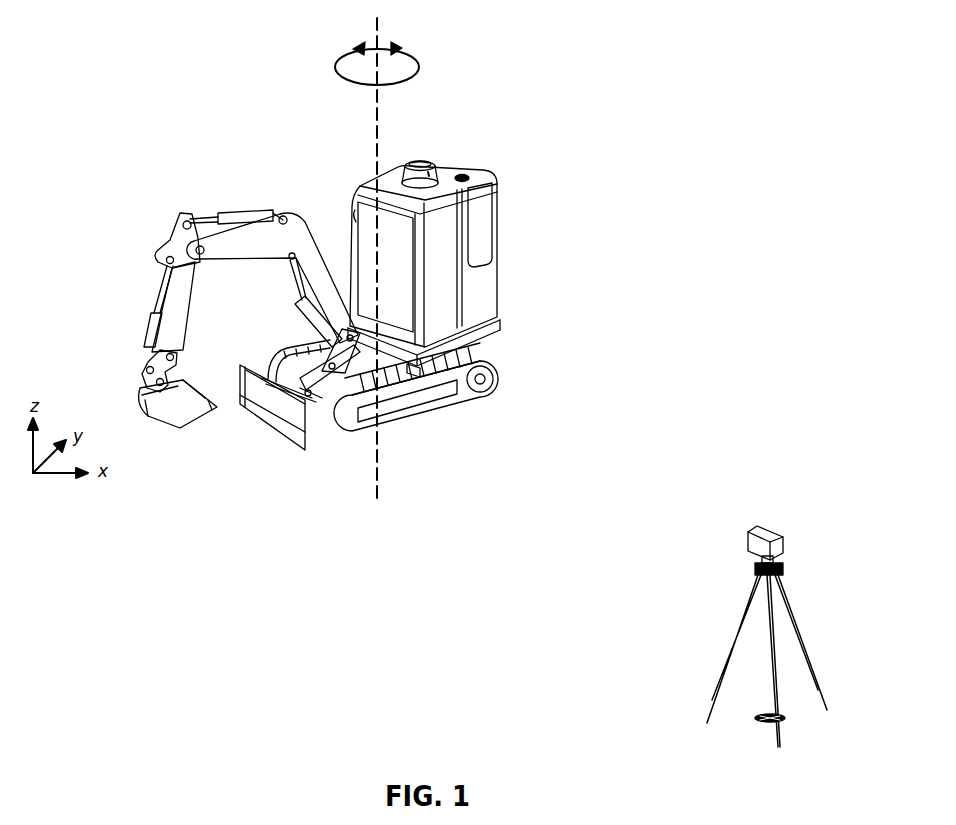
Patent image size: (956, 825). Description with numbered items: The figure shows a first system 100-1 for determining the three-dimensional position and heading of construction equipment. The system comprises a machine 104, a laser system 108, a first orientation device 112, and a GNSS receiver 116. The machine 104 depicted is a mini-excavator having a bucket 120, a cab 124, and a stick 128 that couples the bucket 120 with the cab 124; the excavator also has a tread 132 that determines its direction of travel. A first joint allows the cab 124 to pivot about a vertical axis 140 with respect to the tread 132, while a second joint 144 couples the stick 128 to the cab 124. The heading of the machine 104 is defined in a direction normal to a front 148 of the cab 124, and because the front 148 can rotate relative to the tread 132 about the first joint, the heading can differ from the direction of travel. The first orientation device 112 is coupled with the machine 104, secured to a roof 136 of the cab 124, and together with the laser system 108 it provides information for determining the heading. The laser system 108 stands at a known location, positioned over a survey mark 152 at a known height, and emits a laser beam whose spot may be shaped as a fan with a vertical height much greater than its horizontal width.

The first system 100-1 is at (742, 44).
The machine 104 is at (505, 318).
The laser system 108 is at (768, 528).
The first orientation device 112 is at (420, 165).
The GNSS receiver 116 is at (470, 180).
The bucket 120 is at (190, 402).
The cab 124 is at (492, 300).
The stick 128 is at (313, 228).
The tread 132 is at (503, 372).
The roof 136 is at (452, 172).
The vertical axis 140 is at (380, 135).
The second joint 144 is at (368, 402).
The front 148 is at (366, 226).
The survey mark 152 is at (758, 714).